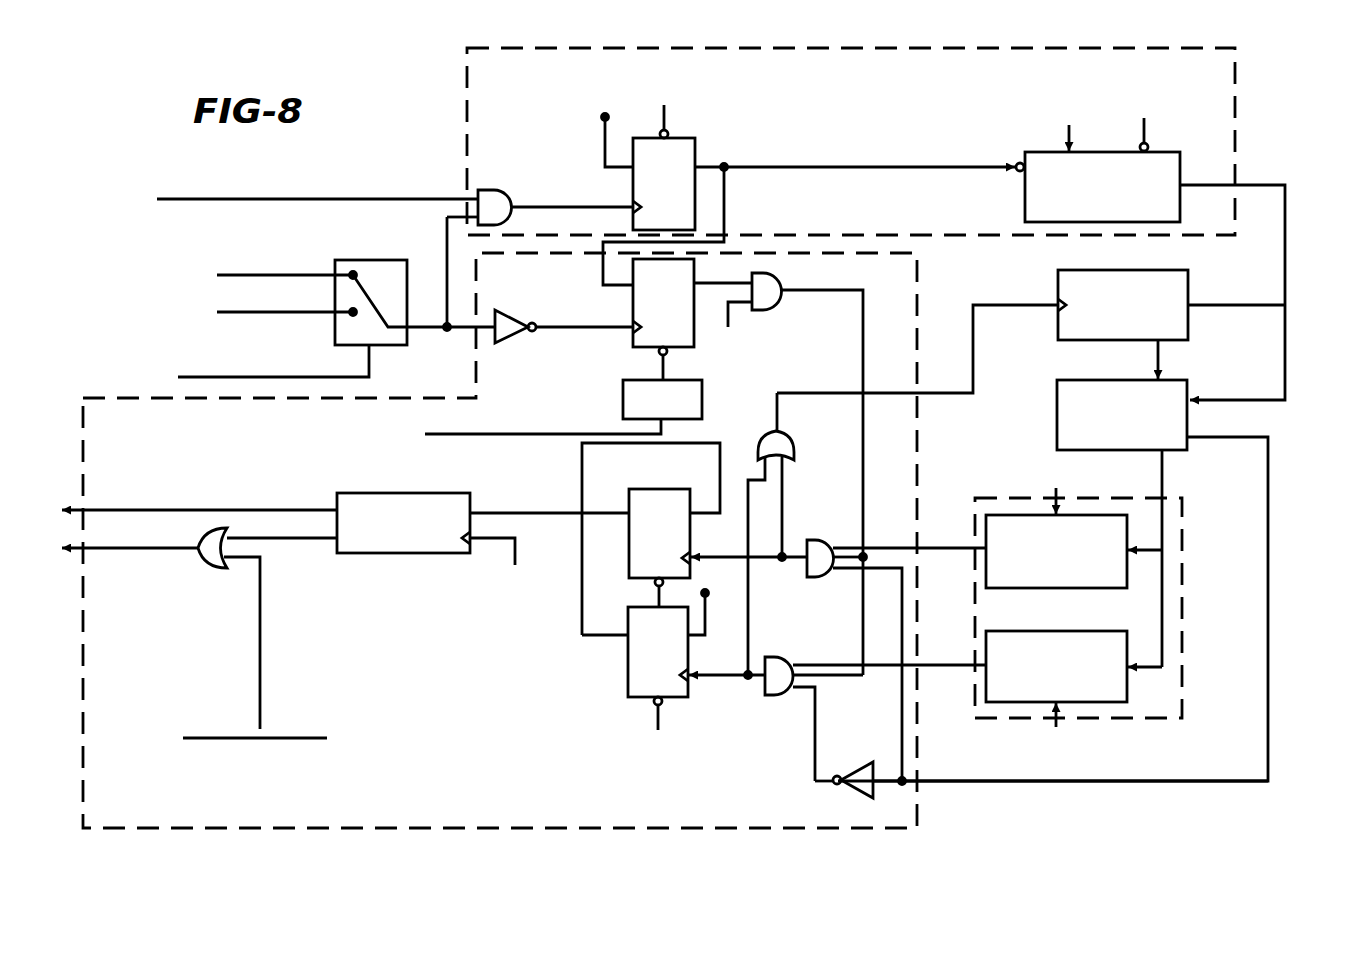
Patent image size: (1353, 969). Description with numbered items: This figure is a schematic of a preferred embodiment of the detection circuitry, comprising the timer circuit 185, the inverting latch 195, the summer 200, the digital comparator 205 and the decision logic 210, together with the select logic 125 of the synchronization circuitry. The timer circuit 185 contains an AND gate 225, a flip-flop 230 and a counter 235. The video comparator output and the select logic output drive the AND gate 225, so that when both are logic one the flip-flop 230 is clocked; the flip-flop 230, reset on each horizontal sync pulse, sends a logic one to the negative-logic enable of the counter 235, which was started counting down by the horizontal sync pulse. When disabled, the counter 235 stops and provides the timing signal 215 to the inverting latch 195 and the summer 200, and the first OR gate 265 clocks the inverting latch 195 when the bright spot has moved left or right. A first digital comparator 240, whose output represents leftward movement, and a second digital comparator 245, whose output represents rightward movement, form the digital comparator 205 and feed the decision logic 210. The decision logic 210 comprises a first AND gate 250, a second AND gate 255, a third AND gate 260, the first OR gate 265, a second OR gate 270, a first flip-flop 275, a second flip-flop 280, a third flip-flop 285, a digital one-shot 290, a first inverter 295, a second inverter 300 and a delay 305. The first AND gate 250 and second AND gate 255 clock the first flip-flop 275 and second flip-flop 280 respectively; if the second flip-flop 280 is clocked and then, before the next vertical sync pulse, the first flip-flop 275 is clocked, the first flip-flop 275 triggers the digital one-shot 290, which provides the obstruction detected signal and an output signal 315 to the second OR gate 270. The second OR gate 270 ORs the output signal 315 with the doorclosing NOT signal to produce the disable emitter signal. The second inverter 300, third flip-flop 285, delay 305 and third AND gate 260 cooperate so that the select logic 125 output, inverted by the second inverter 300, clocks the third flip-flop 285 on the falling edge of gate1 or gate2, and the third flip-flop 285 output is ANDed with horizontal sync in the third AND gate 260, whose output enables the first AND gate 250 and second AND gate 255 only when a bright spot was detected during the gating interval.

The select logic 125 is at (390, 260).
The timer circuit 185 is at (1237, 130).
The inverting latch 195 is at (1190, 292).
The summer 200 is at (1057, 412).
The digital comparator 205 is at (1184, 638).
The decision logic 210 is at (530, 826).
The timing signal 215 is at (1287, 220).
The AND gate 225 is at (504, 190).
The flip-flop 230 is at (697, 148).
The counter 235 is at (1023, 211).
The first digital comparator 240 is at (1075, 590).
The second digital comparator 245 is at (1062, 631).
The first AND gate 250 is at (812, 540).
The second AND gate 255 is at (770, 657).
The third AND gate 260 is at (781, 289).
The first OR gate 265 is at (790, 435).
The second OR gate 270 is at (222, 566).
The first flip-flop 275 is at (660, 489).
The second flip-flop 280 is at (628, 677).
The third flip-flop 285 is at (633, 343).
The digital one-shot 290 is at (432, 553).
The first inverter 295 is at (853, 766).
The second inverter 300 is at (515, 311).
The delay 305 is at (623, 392).
The output signal 315 is at (285, 540).